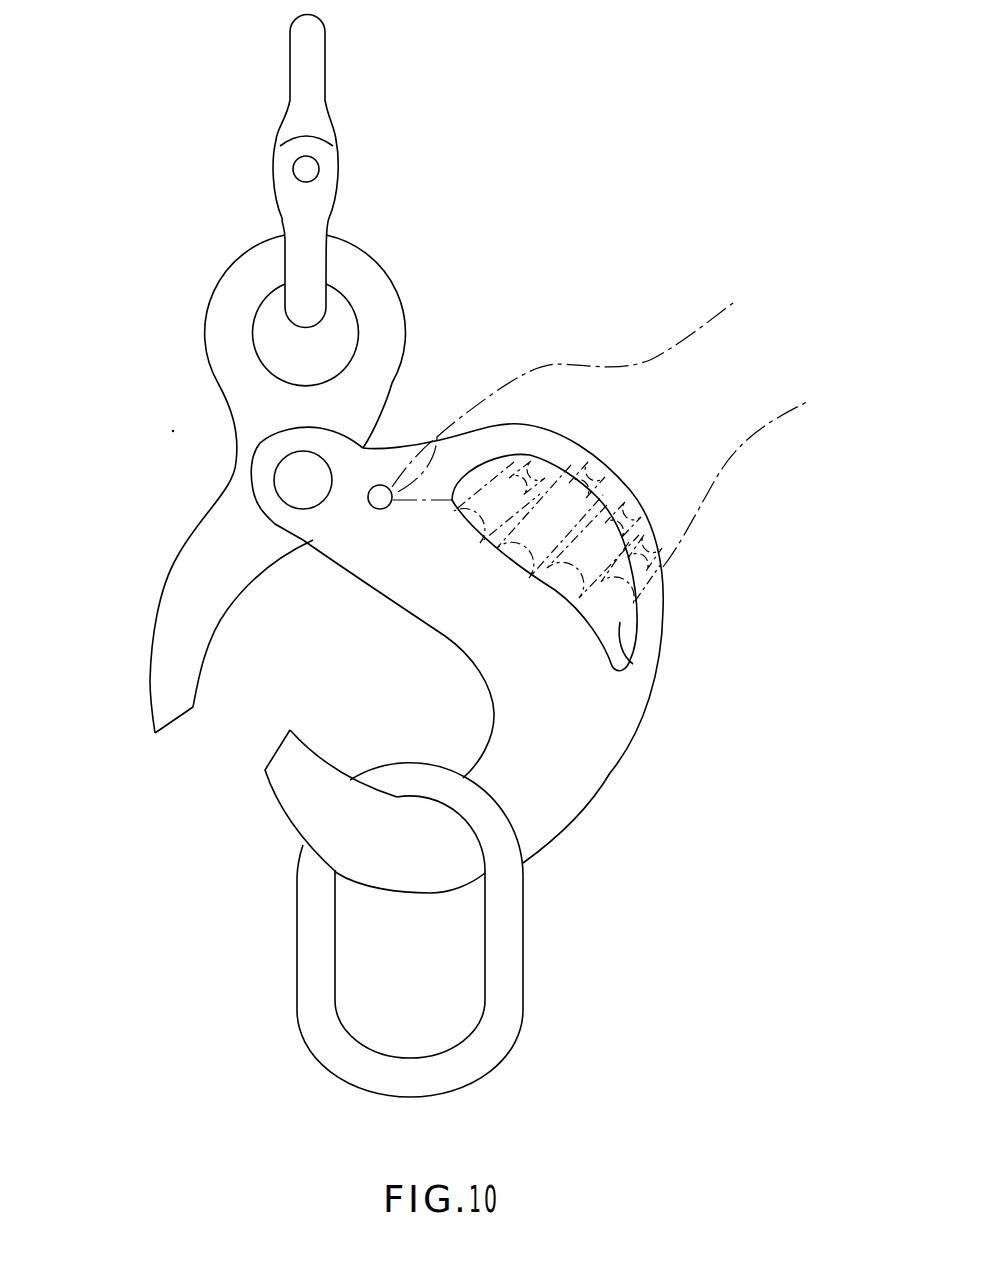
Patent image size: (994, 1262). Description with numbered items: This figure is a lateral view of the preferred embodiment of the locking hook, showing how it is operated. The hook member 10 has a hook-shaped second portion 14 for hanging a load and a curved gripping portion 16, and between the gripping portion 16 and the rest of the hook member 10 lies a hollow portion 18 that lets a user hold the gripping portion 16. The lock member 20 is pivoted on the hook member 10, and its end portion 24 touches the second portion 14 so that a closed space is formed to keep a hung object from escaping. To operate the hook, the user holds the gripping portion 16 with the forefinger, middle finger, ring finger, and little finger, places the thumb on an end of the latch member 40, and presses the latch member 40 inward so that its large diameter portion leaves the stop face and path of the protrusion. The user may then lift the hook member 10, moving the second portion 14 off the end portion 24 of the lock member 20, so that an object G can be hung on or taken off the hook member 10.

The hook member 10 is at (624, 780).
The second portion 14 is at (288, 782).
The gripping portion 16 is at (650, 616).
The hollow portion 18 is at (633, 664).
The lock member 20 is at (167, 547).
The end portion 24 is at (173, 688).
The latch member 40 is at (377, 510).
The object G is at (500, 995).